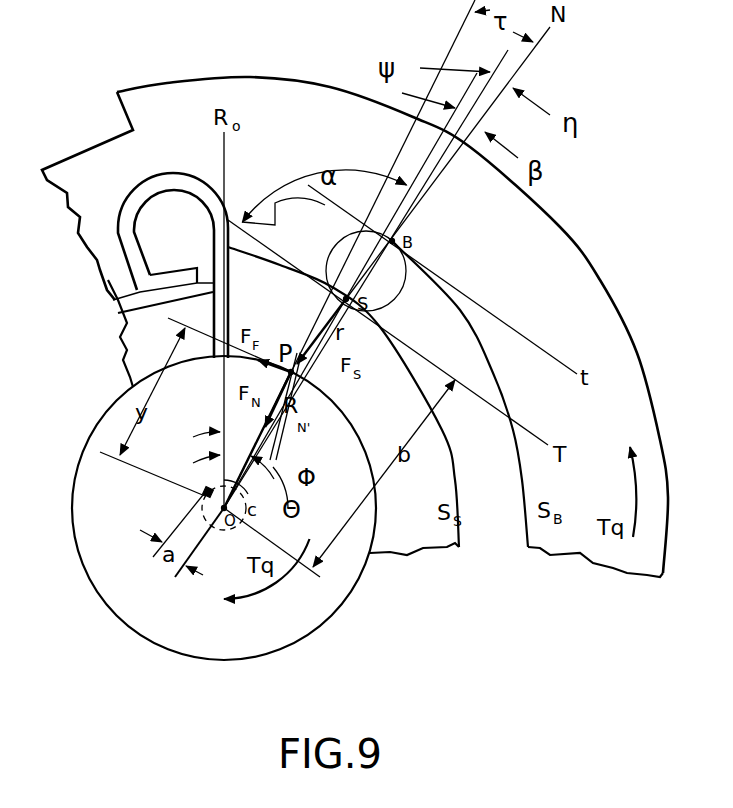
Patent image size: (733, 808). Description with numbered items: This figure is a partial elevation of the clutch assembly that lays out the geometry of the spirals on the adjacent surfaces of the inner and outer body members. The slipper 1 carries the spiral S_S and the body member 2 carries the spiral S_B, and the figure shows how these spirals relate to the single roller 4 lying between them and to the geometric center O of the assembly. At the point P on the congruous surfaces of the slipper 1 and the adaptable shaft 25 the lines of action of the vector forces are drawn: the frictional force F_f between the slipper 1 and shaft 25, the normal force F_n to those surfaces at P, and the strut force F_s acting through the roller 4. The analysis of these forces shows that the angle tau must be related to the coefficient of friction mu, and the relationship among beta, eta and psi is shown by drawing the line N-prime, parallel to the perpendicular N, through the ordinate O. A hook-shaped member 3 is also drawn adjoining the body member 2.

The slipper 1 is at (397, 523).
The body member 2 is at (620, 548).
The spring hook 3 is at (138, 260).
The single roller 4 is at (390, 271).
The adaptable shaft 25 is at (288, 618).